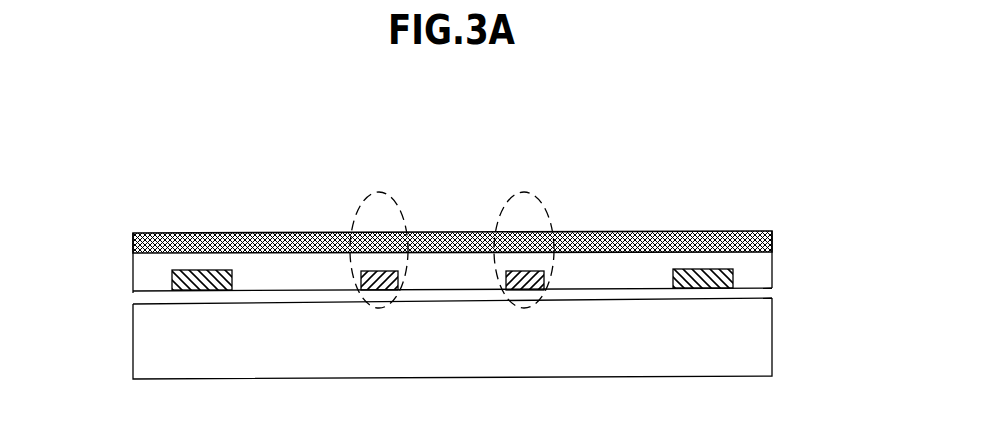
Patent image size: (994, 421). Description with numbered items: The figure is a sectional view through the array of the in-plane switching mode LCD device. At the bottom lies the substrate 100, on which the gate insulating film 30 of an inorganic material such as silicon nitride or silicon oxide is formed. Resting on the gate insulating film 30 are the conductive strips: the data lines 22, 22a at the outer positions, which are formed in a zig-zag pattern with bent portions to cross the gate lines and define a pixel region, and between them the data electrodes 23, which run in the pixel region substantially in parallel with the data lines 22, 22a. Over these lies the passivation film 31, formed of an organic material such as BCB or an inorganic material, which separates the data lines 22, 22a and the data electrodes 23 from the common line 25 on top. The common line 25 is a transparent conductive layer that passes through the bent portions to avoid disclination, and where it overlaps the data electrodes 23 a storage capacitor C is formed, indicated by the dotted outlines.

The common line 25 is at (772, 232).
The passivation film 31 is at (762, 262).
The data line 22 is at (172, 275).
The data electrode 23 is at (377, 272).
The storage capacitor C is at (538, 200).
The data line 22a is at (733, 278).
The gate insulating film 30 is at (763, 299).
The substrate 100 is at (763, 350).